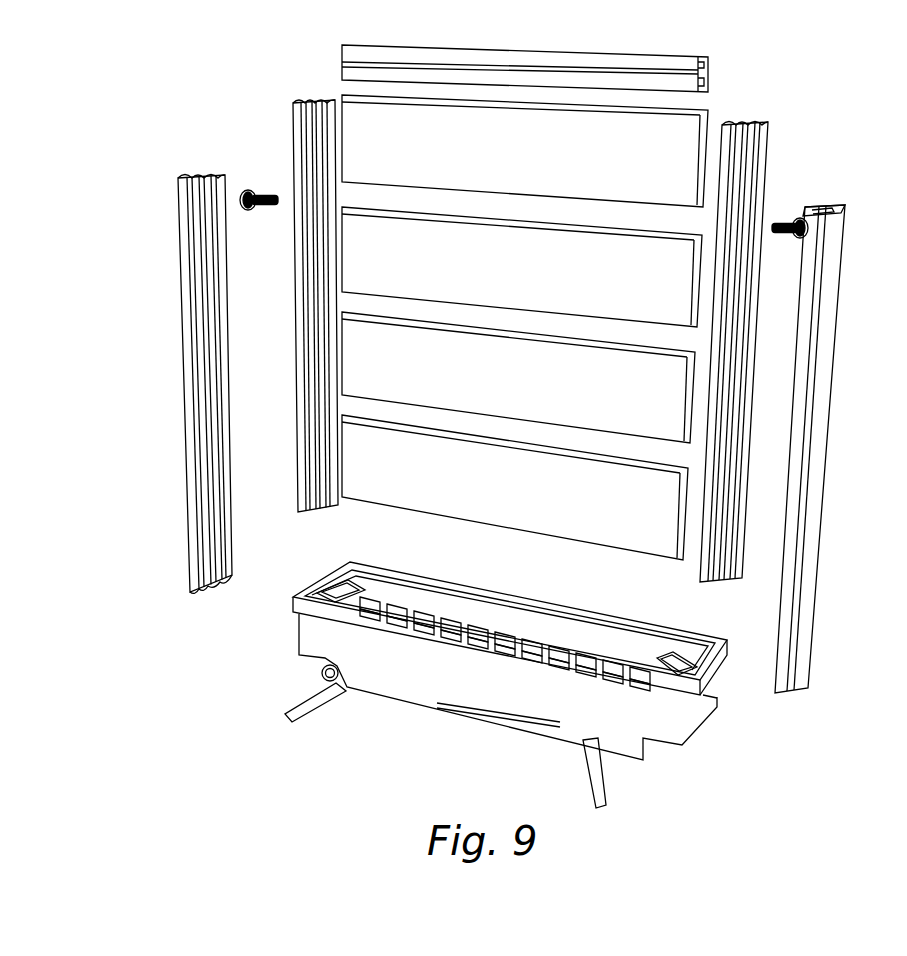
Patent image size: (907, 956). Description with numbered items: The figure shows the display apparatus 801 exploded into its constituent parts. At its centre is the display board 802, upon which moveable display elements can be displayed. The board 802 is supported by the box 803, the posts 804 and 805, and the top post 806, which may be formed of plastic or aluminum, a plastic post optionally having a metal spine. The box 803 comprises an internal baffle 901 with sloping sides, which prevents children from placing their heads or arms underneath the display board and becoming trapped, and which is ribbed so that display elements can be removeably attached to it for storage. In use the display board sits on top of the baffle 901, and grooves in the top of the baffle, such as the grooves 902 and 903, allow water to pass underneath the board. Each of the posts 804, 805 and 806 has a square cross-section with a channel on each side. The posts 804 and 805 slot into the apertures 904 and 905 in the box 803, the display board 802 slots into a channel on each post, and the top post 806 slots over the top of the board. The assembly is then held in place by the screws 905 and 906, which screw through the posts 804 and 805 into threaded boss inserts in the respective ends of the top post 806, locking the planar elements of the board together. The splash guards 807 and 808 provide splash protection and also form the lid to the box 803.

The display apparatus 801 is at (805, 84).
The display board 802 is at (525, 327).
The box 803 is at (435, 685).
The post 804 is at (297, 132).
The post 805 is at (752, 138).
The top post 806 is at (628, 68).
The splash guard 807 is at (185, 367).
The splash guard 808 is at (835, 356).
The internal baffle 901 is at (620, 652).
The groove 902 is at (445, 614).
The groove 903 is at (505, 620).
The aperture 904 is at (338, 588).
The aperture 905 is at (252, 198).
The screw 906 is at (790, 228).